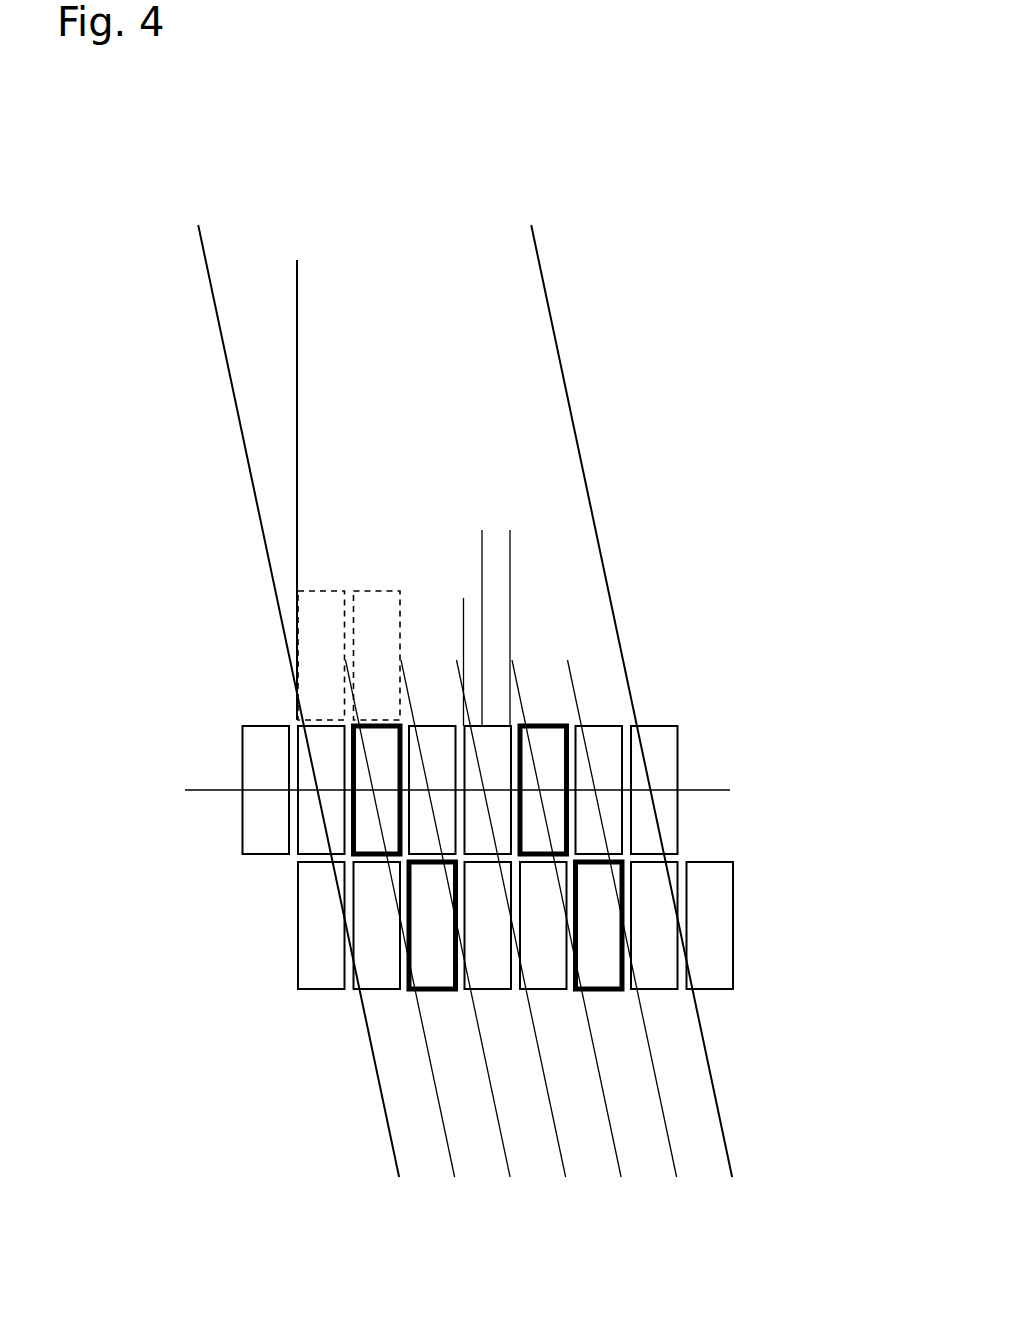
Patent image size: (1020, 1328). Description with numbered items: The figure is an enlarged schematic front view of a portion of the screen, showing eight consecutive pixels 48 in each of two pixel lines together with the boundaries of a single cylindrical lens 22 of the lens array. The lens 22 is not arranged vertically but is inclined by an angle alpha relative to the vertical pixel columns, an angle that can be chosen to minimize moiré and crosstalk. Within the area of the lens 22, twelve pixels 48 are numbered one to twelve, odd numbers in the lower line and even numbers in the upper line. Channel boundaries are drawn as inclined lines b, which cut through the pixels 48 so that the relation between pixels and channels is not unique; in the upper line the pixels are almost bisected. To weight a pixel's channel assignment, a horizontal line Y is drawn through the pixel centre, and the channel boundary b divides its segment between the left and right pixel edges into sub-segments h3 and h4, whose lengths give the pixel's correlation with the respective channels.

The cylindrical lens 22 is at (530, 186).
The pixels 48 is at (678, 728).
The horizontal line Y is at (211, 790).
The channel boundaries b is at (560, 1140).
The sub-segment h3 is at (500, 618).
The sub-segment h4 is at (464, 559).